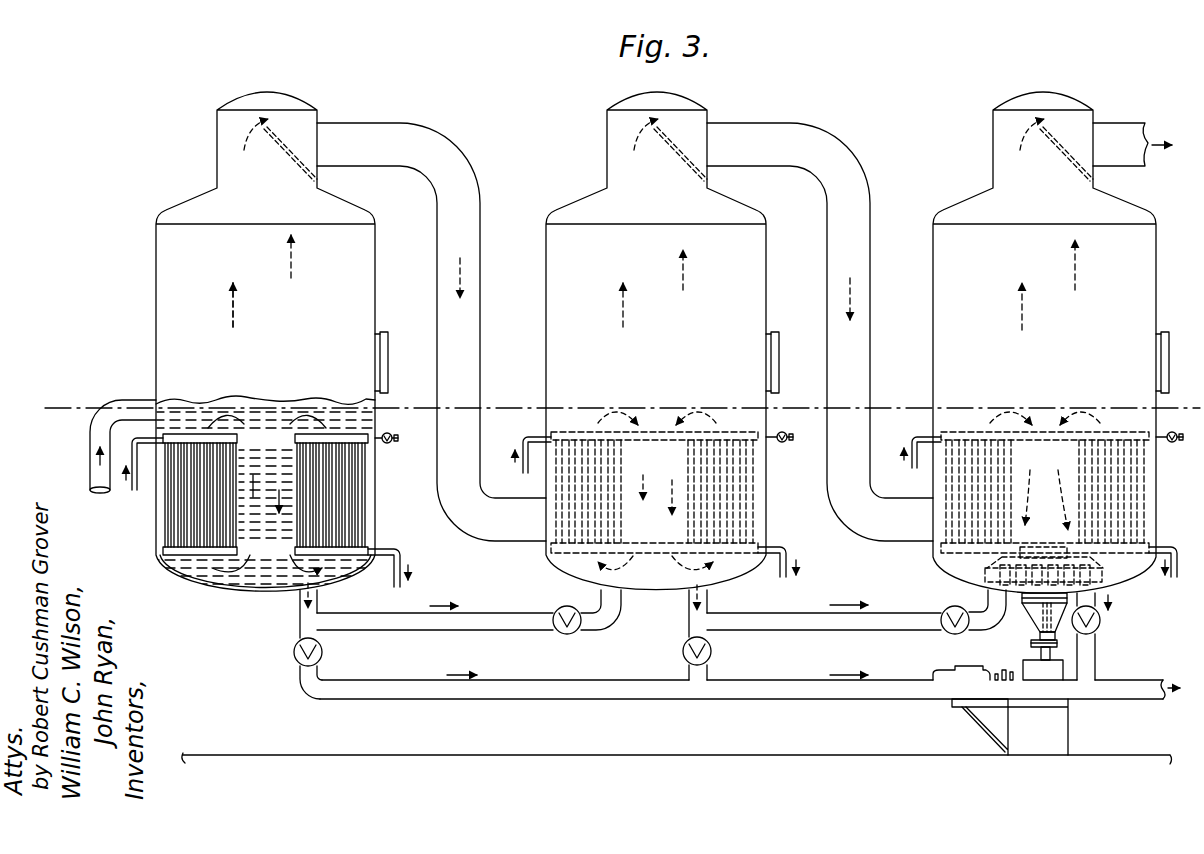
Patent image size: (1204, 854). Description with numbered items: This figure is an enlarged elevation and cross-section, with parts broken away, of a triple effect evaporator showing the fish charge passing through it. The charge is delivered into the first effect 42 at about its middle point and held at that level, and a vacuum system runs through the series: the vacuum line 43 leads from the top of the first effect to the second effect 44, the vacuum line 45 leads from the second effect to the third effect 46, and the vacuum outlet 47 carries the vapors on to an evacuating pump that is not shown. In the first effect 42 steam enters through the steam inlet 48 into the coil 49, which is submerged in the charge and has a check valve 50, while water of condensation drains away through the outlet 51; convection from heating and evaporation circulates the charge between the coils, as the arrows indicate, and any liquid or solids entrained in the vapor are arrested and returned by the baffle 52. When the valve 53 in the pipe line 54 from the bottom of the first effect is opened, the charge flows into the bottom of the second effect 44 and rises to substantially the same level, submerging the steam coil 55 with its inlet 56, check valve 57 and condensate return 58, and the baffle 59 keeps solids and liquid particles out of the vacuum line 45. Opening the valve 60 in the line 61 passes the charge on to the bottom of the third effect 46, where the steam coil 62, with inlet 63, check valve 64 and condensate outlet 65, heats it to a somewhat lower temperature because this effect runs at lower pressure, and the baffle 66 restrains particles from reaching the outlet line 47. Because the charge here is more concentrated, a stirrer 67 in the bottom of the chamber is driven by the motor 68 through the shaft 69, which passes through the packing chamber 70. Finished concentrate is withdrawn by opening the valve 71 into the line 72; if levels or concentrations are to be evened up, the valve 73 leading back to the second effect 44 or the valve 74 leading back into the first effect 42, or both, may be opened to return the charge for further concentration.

The first effect 42 is at (158, 280).
The vacuum line 43 is at (391, 127).
The second effect 44 is at (546, 263).
The vacuum line 45 is at (801, 127).
The third effect 46 is at (935, 258).
The vacuum outlet 47 is at (1128, 128).
The steam inlet 48 is at (142, 490).
The coil 49 is at (352, 503).
The check valve 50 is at (391, 444).
The outlet 51 is at (397, 582).
The baffle 52 is at (285, 160).
The valve 53 is at (569, 634).
The pipe line 54 is at (456, 625).
The steam coil 55 is at (570, 450).
The inlet 56 is at (527, 438).
The check valve 57 is at (784, 443).
The condensate return 58 is at (782, 549).
The baffle 59 is at (690, 158).
The valve 60 is at (939, 632).
The line 61 is at (782, 622).
The steam coil 62 is at (960, 445).
The inlet 63 is at (915, 437).
The check valve 64 is at (1172, 443).
The condensate outlet 65 is at (1160, 547).
The baffle 66 is at (1075, 160).
The stirrer 67 is at (985, 583).
The motor 68 is at (966, 672).
The shaft 69 is at (1037, 645).
The packing chamber 70 is at (1030, 610).
The valve 71 is at (1102, 620).
The line 72 is at (1127, 698).
The valve 73 is at (683, 651).
The valve 74 is at (322, 652).